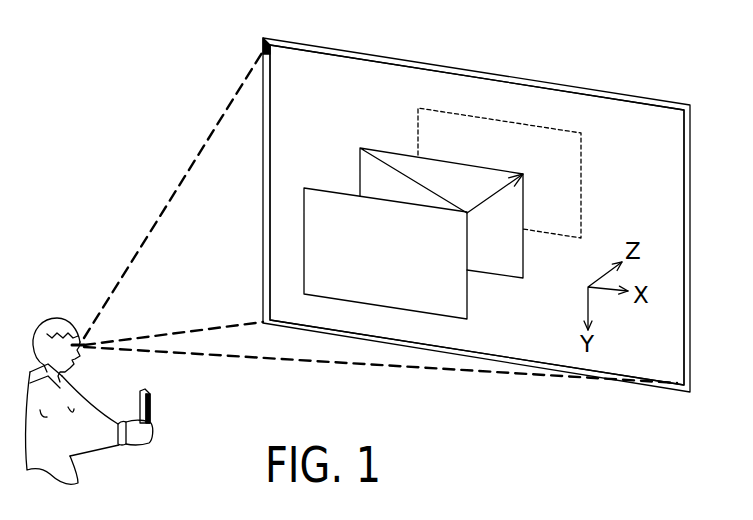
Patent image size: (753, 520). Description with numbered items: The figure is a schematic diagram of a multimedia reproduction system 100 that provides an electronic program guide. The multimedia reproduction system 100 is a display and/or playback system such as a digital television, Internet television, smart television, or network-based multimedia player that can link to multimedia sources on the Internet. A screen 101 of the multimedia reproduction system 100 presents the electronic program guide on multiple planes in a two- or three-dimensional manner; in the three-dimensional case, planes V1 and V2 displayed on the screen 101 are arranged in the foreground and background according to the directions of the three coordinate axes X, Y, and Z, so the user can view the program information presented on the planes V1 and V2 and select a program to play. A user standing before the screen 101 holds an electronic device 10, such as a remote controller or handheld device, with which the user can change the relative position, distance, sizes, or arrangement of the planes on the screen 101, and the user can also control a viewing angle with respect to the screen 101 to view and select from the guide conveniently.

The electronic device 10 is at (152, 405).
The multimedia reproduction system 100 is at (515, 77).
The screen 101 is at (322, 82).
The plane V1 is at (329, 188).
The plane V2 is at (388, 152).